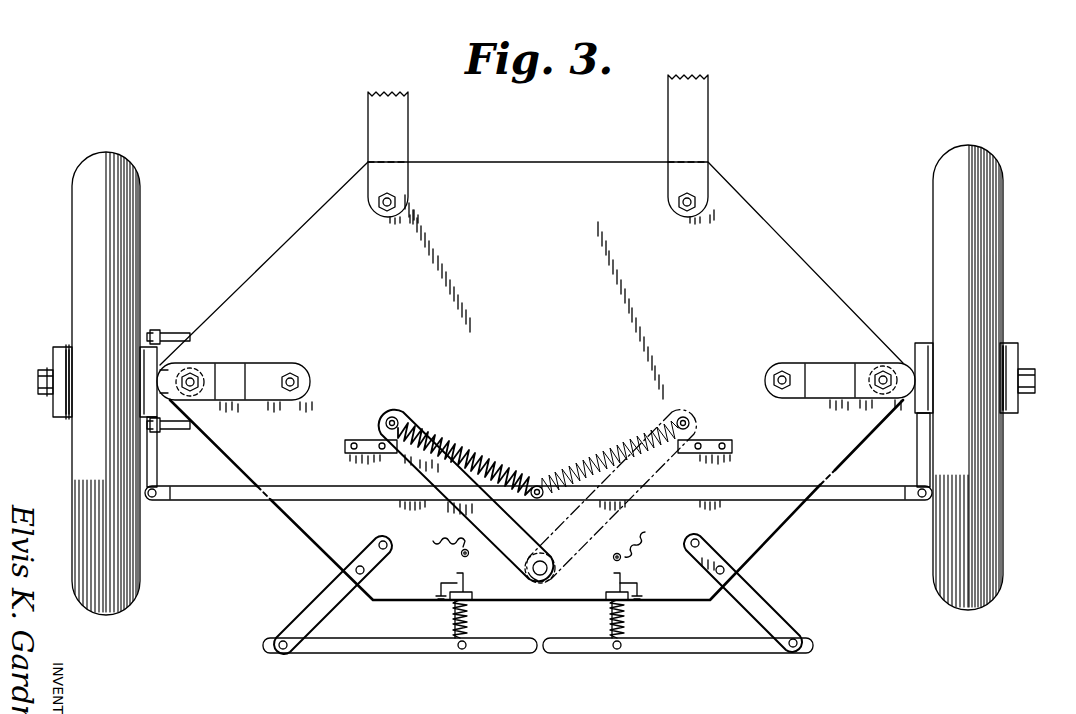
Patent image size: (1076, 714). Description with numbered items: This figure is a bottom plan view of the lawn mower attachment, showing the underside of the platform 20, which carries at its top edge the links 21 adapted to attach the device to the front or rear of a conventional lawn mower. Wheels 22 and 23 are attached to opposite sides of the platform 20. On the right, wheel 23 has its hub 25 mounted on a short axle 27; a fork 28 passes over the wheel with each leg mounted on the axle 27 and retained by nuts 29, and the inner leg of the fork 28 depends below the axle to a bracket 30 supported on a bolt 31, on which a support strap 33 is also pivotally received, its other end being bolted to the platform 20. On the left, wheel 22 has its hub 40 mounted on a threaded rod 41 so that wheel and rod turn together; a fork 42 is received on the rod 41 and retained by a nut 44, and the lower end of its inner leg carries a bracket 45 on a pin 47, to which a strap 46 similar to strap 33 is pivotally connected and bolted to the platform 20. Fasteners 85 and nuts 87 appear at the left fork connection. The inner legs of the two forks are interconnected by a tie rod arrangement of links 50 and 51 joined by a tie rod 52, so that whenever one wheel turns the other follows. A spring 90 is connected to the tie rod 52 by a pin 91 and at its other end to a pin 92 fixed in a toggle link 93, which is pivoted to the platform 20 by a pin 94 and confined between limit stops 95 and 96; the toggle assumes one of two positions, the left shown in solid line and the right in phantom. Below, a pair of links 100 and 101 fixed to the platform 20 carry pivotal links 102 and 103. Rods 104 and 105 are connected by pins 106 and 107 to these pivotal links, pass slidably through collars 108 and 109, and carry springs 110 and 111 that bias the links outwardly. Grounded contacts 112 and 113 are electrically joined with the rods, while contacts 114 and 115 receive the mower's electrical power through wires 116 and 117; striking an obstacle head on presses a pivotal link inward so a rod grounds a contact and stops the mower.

The platform 20 is at (760, 226).
The links 21 is at (404, 125).
The wheel 22 is at (141, 235).
The wheel 23 is at (935, 213).
The hub 25 is at (1003, 418).
The axle 27 is at (1035, 380).
The fork 28 is at (1013, 343).
The nuts 29 is at (1022, 393).
The bracket 30 is at (905, 360).
The bolt or pin 31 is at (878, 369).
The support strap or bar 33 is at (825, 398).
The hub 40 is at (68, 418).
The threaded rod 41 is at (38, 380).
The fork 42 is at (60, 347).
The nut 44 is at (50, 396).
The bracket 45 is at (172, 362).
The strap 46 is at (257, 400).
The pin or bolt 47 is at (192, 391).
The link 50 is at (157, 465).
The link 51 is at (917, 452).
The tie rod 52 is at (773, 486).
The bolt 85 is at (187, 340).
The nut 87 is at (165, 334).
The spring 90 is at (478, 455).
The pin 91 is at (537, 485).
The pin 92 is at (394, 418).
The toggle link 93 is at (410, 464).
The pin 94 is at (540, 584).
The limit stop 95 is at (355, 440).
The limit stop 96 is at (722, 440).
The link 100 is at (314, 611).
The link 101 is at (768, 600).
The pivotal link 102 is at (395, 653).
The pivotal link 103 is at (700, 653).
The rod 104 is at (452, 622).
The rod 105 is at (608, 620).
The pin 106 is at (462, 649).
The pin 107 is at (617, 649).
The collar 108 is at (470, 592).
The collar 109 is at (612, 592).
The spring 110 is at (470, 620).
The spring 111 is at (628, 620).
The grounded contact 112 is at (441, 583).
The grounded contact 113 is at (637, 584).
The contact 114 is at (469, 554).
The contact 115 is at (621, 557).
The wire 116 is at (433, 547).
The wire 117 is at (645, 532).